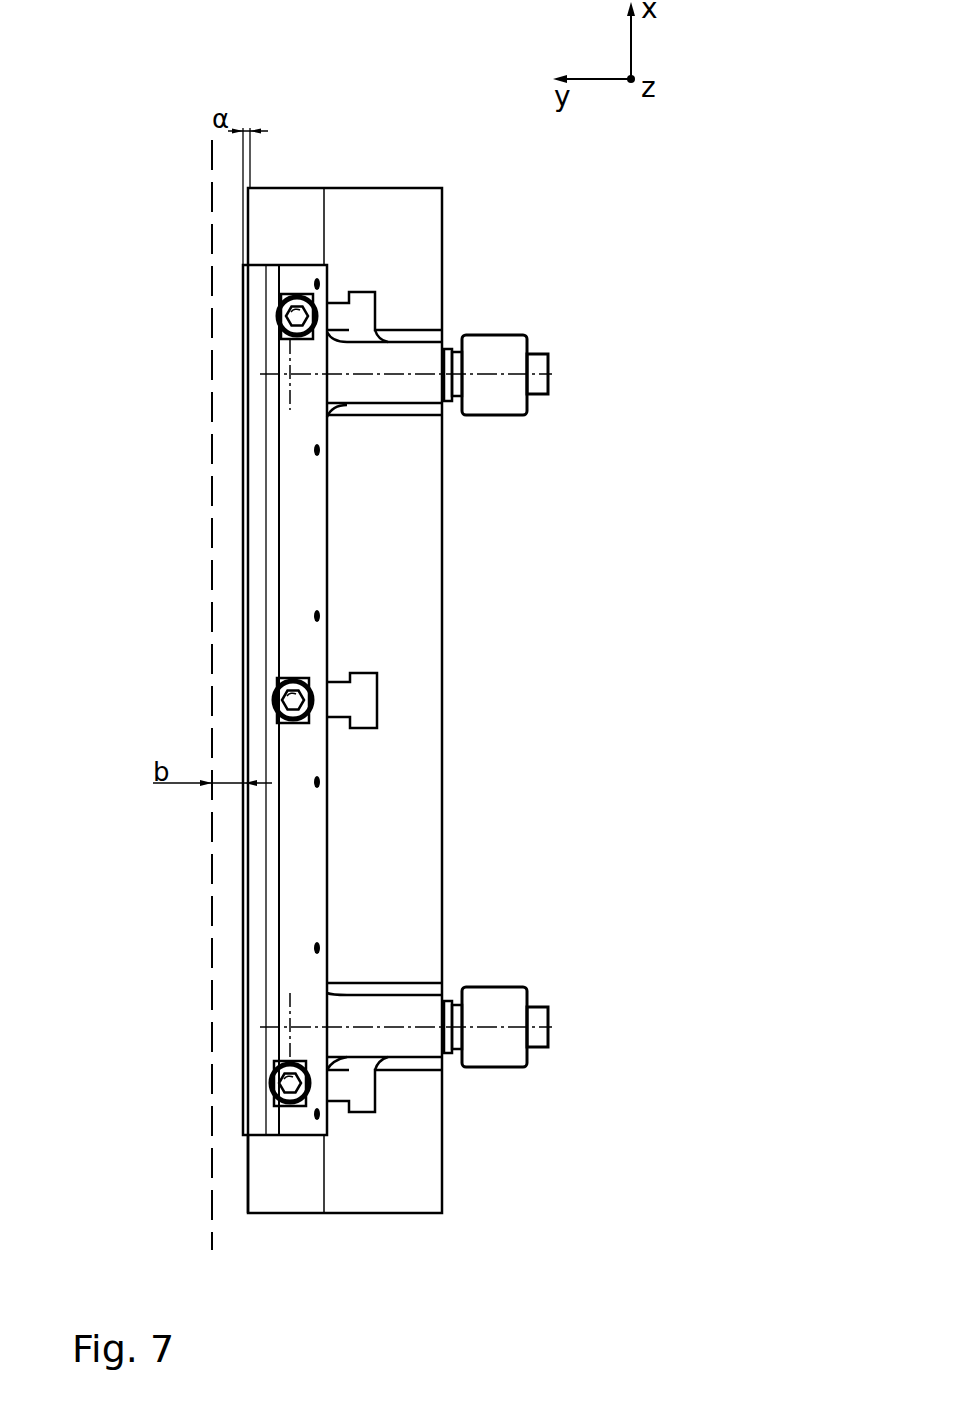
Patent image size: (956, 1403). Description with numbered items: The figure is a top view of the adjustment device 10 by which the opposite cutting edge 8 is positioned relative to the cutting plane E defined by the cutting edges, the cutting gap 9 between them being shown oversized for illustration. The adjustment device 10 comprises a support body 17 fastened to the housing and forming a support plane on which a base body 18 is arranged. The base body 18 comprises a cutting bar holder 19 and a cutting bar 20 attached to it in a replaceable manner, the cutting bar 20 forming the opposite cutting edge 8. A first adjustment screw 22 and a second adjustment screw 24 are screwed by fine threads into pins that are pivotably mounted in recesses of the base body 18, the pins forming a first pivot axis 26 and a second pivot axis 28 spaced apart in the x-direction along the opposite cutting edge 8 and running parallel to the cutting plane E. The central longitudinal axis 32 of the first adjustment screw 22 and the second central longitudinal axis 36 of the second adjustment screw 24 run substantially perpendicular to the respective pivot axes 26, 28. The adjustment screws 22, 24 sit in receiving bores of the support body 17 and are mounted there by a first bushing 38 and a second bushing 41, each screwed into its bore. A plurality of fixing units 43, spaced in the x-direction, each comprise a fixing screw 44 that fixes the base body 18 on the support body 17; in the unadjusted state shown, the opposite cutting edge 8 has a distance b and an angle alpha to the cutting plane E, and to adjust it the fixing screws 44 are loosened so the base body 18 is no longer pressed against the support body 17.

The opposite cutting edge 8 is at (243, 837).
The cutting gap 9 is at (226, 1195).
The adjustment device 10 is at (335, 128).
The support body 17 is at (395, 178).
The base body 18 is at (207, 601).
The cutting bar holder 19 is at (298, 493).
The cutting bar 20 is at (255, 568).
The first adjustment screw 22 is at (563, 1037).
The second adjustment screw 24 is at (563, 383).
The first pivot axis 26 is at (290, 1027).
The second pivot axis 28 is at (290, 375).
The central longitudinal axis 32 is at (552, 1027).
The second central longitudinal axis 36 is at (552, 374).
The first bushing 38 is at (447, 1045).
The second bushing 41 is at (447, 398).
The fixing unit 43 is at (262, 322).
The fixing screw 44 is at (283, 307).
The cutting plane E is at (210, 914).